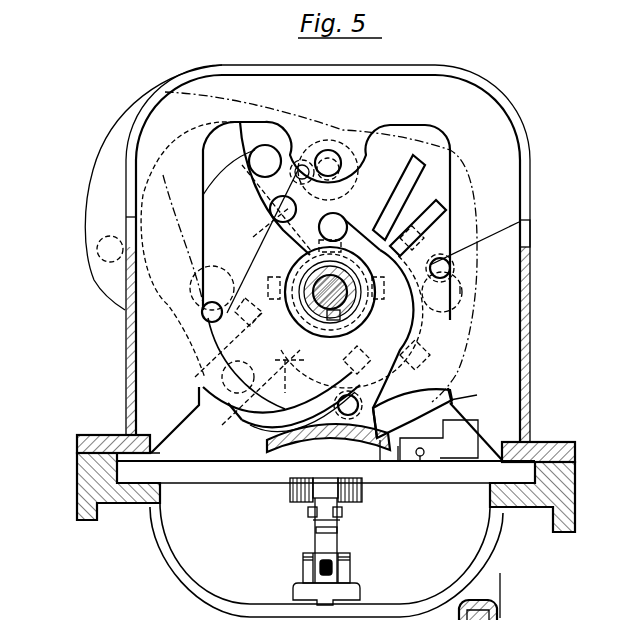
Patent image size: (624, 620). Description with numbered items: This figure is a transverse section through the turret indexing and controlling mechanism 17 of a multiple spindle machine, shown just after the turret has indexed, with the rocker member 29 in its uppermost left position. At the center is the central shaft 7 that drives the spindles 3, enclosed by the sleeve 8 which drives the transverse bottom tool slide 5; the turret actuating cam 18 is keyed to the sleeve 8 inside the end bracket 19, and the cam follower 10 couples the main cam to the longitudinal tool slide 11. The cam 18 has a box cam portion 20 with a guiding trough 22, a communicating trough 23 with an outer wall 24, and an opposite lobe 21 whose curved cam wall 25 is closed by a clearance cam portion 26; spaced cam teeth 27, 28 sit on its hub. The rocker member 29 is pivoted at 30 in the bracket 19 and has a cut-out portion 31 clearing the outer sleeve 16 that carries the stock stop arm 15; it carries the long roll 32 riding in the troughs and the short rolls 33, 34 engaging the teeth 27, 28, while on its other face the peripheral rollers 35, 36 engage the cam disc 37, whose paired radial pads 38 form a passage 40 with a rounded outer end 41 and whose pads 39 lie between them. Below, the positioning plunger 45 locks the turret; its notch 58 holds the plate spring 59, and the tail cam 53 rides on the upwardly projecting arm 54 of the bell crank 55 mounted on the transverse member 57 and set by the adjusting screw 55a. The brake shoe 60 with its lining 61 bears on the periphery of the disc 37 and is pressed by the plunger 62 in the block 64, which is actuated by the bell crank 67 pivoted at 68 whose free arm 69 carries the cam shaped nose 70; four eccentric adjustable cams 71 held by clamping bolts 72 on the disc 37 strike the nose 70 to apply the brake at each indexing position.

The spindle 3 is at (462, 290).
The transverse bottom tool slide 5 is at (506, 598).
The central shaft 7 is at (313, 307).
The sleeve 8 is at (323, 322).
The cam follower or roller 10 is at (313, 456).
The longitudinal tool slide 11 is at (465, 484).
The stock stop arm 15 is at (343, 198).
The outer sleeve 16 is at (423, 323).
The actuating and controlling mechanism 17 is at (85, 215).
The turret actuating cam 18 is at (253, 272).
The end bracket 19 is at (503, 110).
The box cam portion 20 is at (472, 252).
The lobe portion 21 is at (213, 345).
The guiding trough 22 is at (413, 236).
The communicating trough 23 is at (415, 343).
The outer wall 24 is at (410, 320).
The curved cam wall 25 is at (203, 380).
The clearance cam portion 26 is at (237, 278).
The cam tooth 27 is at (262, 310).
The cam tooth 28 is at (297, 250).
The rocker member 29 is at (120, 284).
The pivot 30 is at (333, 148).
The cut-out portion 31 is at (225, 145).
The long roll 32 is at (330, 218).
The short roll 33 is at (271, 212).
The short roll 34 is at (252, 157).
The peripheral roller 35 is at (98, 248).
The peripheral roller 36 is at (222, 403).
The cam disc 37 is at (245, 412).
The radial pad 38 is at (425, 222).
The radial pad 39 is at (410, 400).
The passage 40 is at (418, 192).
The rounded outer end 41 is at (446, 208).
The positioning plunger 45 is at (308, 512).
The tail cam 53 is at (337, 529).
The upwardly projecting arm 54 is at (317, 535).
The bell crank 55 is at (313, 567).
The adjusting screw 55a is at (333, 565).
The transverse member 57 is at (393, 608).
The notch 58 is at (342, 513).
The plate spring 59 is at (310, 523).
The brake shoe 60 is at (452, 403).
The brake lining 61 is at (452, 390).
The plunger 62 is at (440, 430).
The block 64 is at (453, 457).
The bell crank 67 is at (398, 452).
The pivot 68 is at (420, 458).
The free arm 69 is at (393, 450).
The cam shaped nose 70 is at (377, 425).
The eccentric adjustable cam 71 is at (345, 415).
The clamping bolt 72 is at (345, 385).